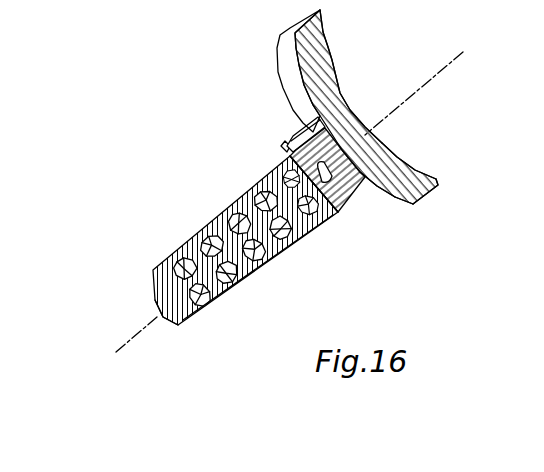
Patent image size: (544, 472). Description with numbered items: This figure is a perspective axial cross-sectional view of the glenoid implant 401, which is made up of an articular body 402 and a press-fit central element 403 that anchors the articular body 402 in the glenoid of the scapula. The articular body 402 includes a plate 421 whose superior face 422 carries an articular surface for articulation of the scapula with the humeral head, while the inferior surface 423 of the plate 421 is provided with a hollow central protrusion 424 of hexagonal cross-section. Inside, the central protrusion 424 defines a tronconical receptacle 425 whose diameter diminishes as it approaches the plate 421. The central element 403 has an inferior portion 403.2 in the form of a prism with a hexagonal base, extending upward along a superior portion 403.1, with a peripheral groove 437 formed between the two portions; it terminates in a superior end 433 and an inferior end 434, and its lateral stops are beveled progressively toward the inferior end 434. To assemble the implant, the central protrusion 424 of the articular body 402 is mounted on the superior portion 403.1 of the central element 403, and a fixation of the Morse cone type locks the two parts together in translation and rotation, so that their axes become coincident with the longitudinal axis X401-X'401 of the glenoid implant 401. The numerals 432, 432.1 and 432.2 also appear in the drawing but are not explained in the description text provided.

The glenoid implant 401 is at (285, 195).
The articular body 402 is at (327, 128).
The central element 403 is at (199, 223).
The superior portion 403.1 is at (288, 131).
The inferior portion 403.2 is at (233, 268).
The plate 421 is at (424, 195).
The superior face 422 is at (399, 146).
The inferior surface 423 is at (410, 214).
The central protrusion 424 is at (356, 204).
The tronconical receptacle 425 is at (352, 118).
The damping elements 432 is at (152, 308).
The blade front face 432.1 is at (395, 139).
The damping element in hub 432.2 is at (318, 188).
The superior end 433 is at (383, 158).
The inferior end 434 is at (180, 338).
The peripheral groove 437 is at (282, 149).
The longitudinal axis X401 is at (436, 87).
The longitudinal axis X'401 is at (114, 349).